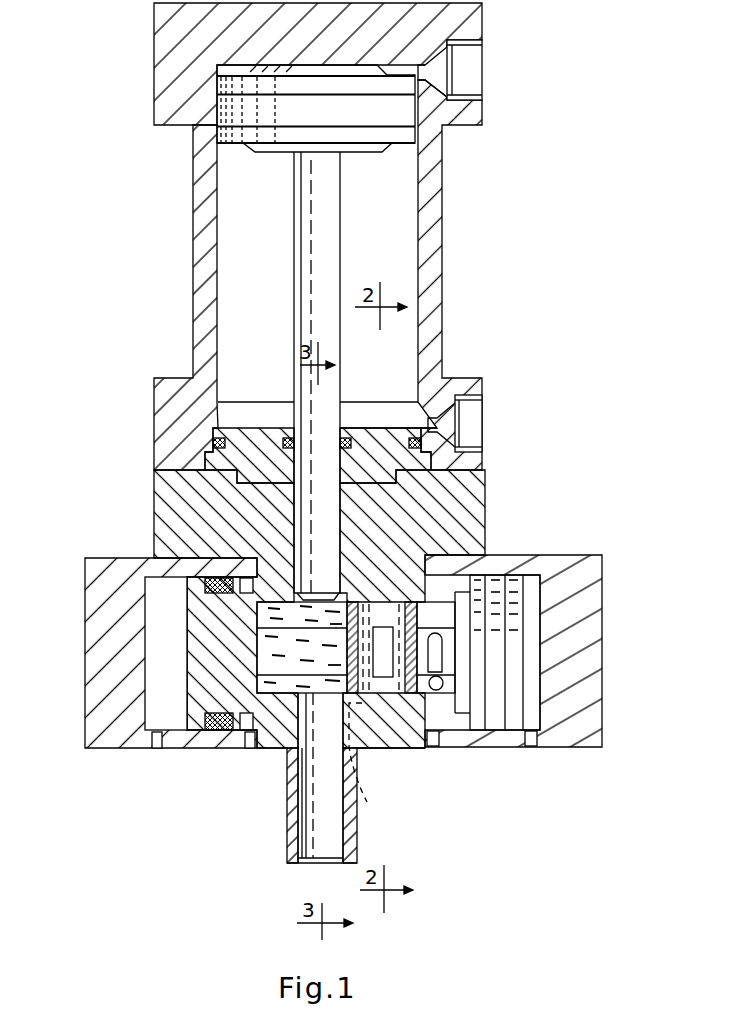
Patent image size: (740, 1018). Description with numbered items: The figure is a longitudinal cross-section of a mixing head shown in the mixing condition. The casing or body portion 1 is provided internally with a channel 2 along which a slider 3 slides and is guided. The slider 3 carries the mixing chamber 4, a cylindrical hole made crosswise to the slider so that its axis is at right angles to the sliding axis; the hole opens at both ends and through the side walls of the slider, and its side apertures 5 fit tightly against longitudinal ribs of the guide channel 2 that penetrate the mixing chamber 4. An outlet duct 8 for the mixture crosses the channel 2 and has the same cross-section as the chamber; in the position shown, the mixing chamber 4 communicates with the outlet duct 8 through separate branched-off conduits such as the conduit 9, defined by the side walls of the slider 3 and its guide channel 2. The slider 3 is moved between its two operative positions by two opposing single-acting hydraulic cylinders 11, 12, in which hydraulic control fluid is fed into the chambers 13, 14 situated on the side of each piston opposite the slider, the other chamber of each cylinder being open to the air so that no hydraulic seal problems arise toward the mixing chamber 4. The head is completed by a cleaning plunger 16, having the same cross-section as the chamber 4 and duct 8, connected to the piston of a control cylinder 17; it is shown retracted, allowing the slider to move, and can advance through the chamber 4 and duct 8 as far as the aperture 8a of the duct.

The casing or body portion 1 is at (168, 507).
The channel 2 is at (413, 600).
The slider 3 is at (412, 707).
The mixing chamber 4 is at (371, 620).
The side apertures 5 is at (383, 660).
The outlet duct 8 is at (317, 812).
The aperture of the outlet duct 8a is at (312, 865).
The branched-off path or conduit 9 is at (362, 764).
The single-acting hydraulic cylinder 11 is at (108, 735).
The single-acting hydraulic cylinder 12 is at (557, 730).
The chamber of the hydraulic cylinder 13 is at (162, 592).
The chamber of the hydraulic cylinder 14 is at (532, 588).
The plunger 16 is at (315, 263).
The control cylinder 17 is at (203, 169).